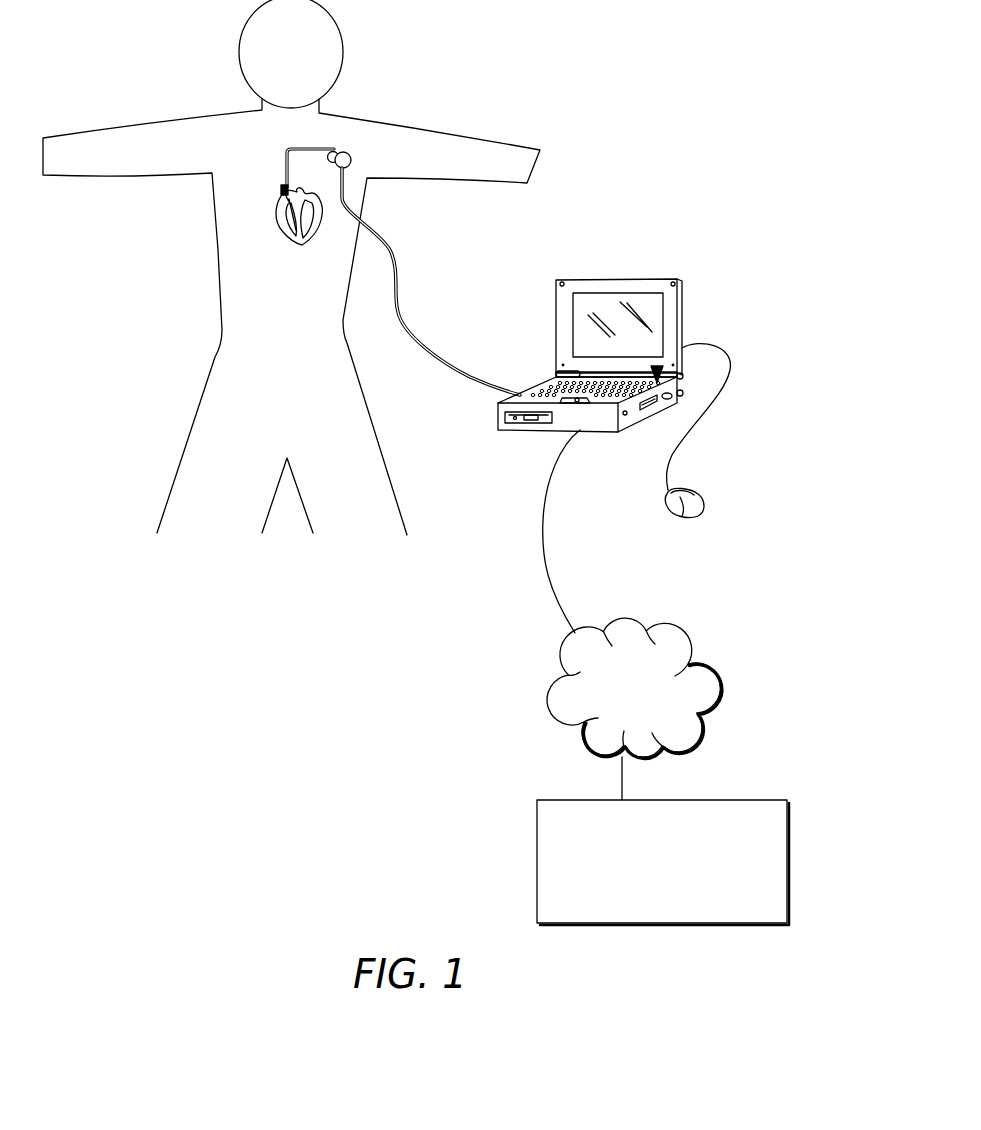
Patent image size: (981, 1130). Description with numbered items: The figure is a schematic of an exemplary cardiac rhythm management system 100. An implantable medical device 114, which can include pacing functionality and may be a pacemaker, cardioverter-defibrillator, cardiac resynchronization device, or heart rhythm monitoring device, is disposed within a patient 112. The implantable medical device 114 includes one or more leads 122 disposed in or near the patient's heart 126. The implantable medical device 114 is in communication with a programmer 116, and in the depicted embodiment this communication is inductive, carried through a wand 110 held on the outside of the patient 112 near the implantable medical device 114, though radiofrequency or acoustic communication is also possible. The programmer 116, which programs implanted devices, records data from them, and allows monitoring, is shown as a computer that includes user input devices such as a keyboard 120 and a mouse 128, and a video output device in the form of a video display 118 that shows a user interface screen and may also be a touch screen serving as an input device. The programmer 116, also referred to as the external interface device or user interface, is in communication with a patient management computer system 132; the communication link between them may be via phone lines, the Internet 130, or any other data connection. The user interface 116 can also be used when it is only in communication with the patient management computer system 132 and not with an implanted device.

The CRM system 100 is at (436, 446).
The wand 110 is at (367, 177).
The patient 112 is at (98, 147).
The implantable medical device 114 is at (353, 157).
The programmer 116 is at (635, 417).
The video display 118 is at (633, 302).
The keyboard 120 is at (660, 365).
The leads 122 is at (284, 164).
The heart 126 is at (308, 241).
The mouse 128 is at (702, 492).
The Internet 130 is at (650, 697).
The patient management computer system 132 is at (768, 800).